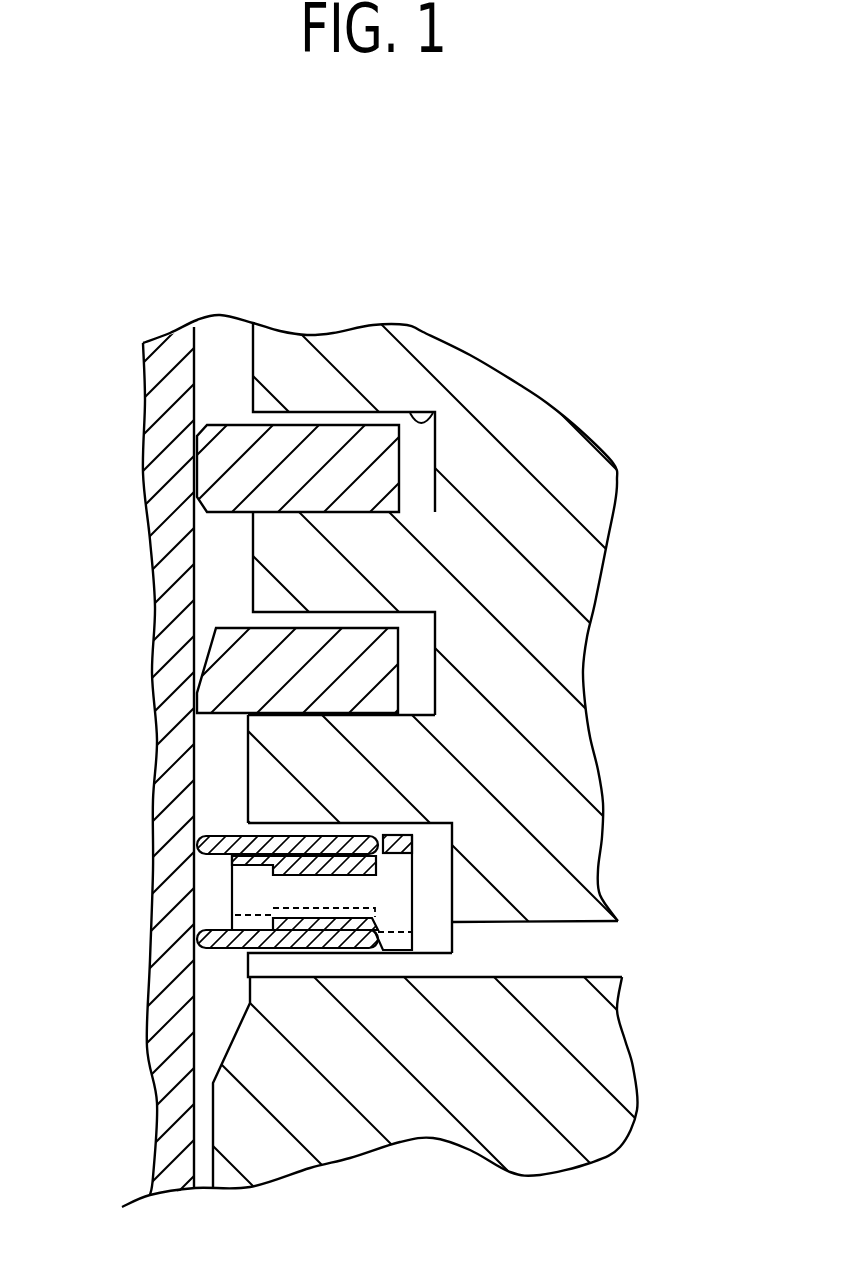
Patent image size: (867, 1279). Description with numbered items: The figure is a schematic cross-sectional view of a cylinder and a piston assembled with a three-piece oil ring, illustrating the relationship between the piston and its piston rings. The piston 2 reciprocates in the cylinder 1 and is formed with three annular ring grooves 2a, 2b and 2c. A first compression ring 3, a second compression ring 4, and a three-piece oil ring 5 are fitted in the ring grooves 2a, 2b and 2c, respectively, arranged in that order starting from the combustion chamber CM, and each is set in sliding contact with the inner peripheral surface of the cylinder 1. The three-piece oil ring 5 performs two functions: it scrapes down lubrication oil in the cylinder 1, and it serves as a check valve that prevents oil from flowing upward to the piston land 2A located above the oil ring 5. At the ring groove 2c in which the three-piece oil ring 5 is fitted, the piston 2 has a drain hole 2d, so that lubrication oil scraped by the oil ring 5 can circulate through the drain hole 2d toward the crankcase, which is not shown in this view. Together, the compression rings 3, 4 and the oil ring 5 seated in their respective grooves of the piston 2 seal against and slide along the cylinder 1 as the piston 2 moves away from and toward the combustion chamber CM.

The cylinder 1 is at (205, 342).
The piston 2 is at (582, 493).
The ring groove 2a is at (421, 412).
The ring groove 2b is at (414, 616).
The ring groove 2c is at (453, 858).
The drain hole 2d is at (565, 928).
The piston land 2A is at (247, 767).
The first compression ring 3 is at (225, 426).
The second compression ring 4 is at (283, 627).
The three-piece oil ring 5 is at (222, 902).
The combustion chamber CM is at (363, 188).